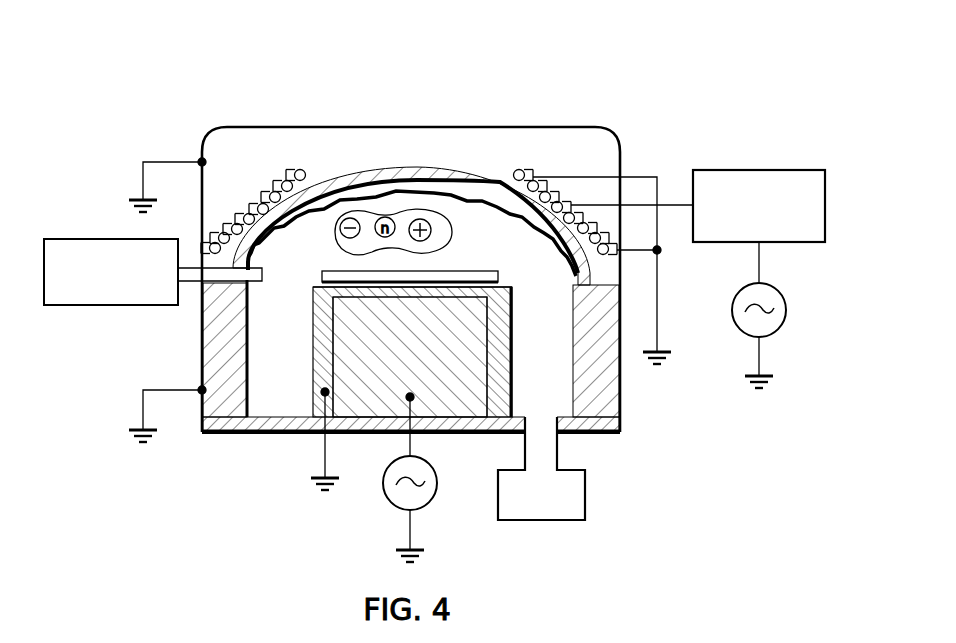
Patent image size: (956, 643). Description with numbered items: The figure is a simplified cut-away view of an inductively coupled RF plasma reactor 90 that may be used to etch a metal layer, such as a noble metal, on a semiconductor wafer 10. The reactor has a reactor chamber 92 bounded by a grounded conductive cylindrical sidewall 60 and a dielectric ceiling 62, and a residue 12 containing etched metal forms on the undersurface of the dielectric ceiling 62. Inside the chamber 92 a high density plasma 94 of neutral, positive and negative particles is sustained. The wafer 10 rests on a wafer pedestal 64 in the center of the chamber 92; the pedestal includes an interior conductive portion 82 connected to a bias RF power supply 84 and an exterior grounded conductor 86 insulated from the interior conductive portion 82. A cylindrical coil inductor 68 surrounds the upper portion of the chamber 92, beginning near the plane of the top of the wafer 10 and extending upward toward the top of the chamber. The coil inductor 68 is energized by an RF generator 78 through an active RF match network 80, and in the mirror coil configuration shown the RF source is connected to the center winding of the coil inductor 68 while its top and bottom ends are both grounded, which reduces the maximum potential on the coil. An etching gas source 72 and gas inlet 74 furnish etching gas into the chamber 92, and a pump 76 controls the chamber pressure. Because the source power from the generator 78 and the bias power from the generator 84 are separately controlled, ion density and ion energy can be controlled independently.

The inductively coupled RF plasma reactor 90 is at (505, 112).
The residue 12 is at (337, 182).
The dielectric ceiling 62 is at (407, 166).
The high density plasma 94 is at (437, 200).
The coil inductor 68 is at (525, 174).
The RF match network 80 is at (787, 169).
The RF generator 78 is at (787, 315).
The semiconductor wafer 10 is at (497, 272).
The wafer pedestal 64 is at (525, 288).
The gas inlet 74 is at (262, 276).
The reactor chamber 92 is at (257, 360).
The interior conductive portion 82 is at (510, 333).
The exterior grounded conductor 86 is at (510, 385).
The conductive cylindrical sidewall 60 is at (206, 320).
The etching gas source 72 is at (90, 305).
The bias RF power supply 84 is at (425, 508).
The pump 76 is at (548, 521).